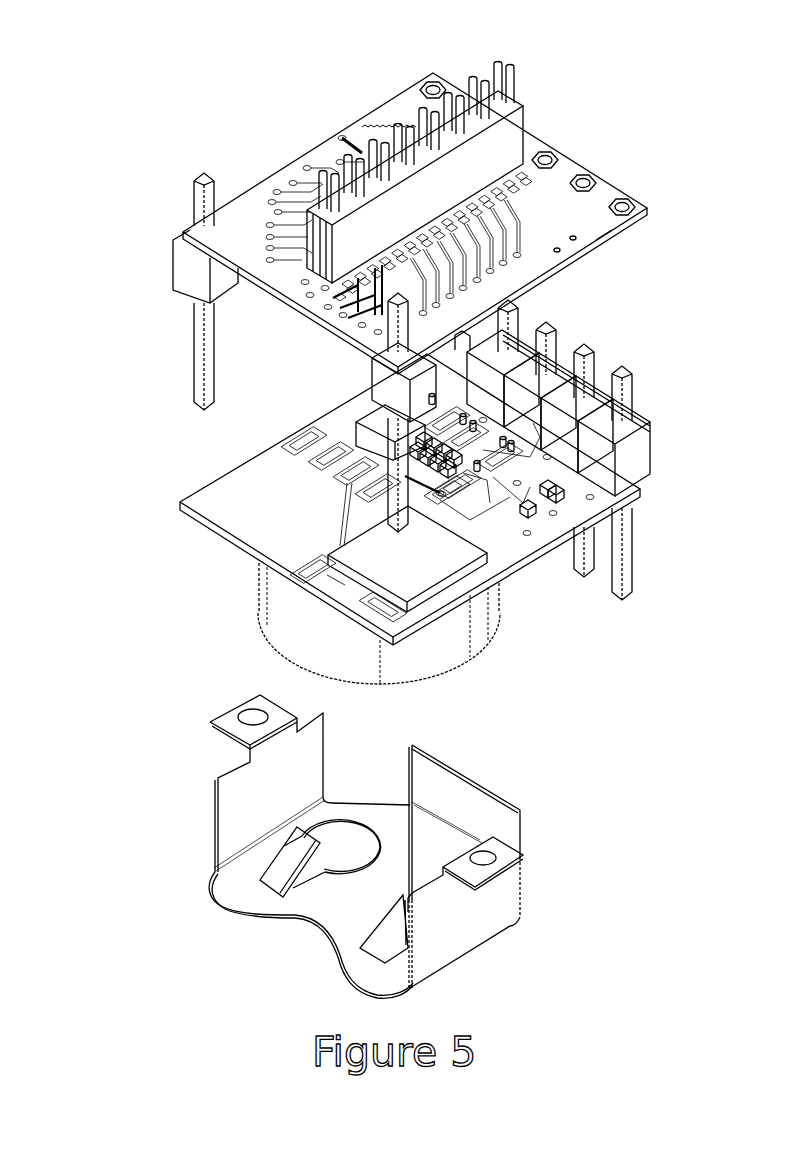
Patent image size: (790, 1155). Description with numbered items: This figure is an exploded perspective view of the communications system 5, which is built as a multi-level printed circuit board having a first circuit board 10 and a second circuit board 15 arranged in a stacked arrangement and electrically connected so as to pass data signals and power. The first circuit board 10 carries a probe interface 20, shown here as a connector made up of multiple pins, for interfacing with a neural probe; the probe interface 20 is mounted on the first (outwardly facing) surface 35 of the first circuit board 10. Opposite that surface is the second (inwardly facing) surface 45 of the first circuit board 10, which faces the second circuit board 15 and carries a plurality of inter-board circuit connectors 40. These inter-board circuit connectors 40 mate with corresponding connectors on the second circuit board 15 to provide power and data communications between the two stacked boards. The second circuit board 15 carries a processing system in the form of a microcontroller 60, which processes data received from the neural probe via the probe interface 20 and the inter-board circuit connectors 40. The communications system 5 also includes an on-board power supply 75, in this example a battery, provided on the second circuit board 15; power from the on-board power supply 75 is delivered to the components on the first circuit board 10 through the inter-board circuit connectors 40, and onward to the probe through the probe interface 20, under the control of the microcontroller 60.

The communications system 5 is at (107, 223).
The first circuit board 10 is at (623, 225).
The second circuit board 15 is at (600, 507).
The probe interface 20 is at (453, 98).
The first (outwardly facing) surface 35 is at (407, 110).
The inter-board circuit connectors 40 is at (200, 203).
The second (inwardly facing) surface 45 is at (590, 250).
The microcontroller 60 is at (447, 557).
The on-board power supply 75 is at (293, 618).